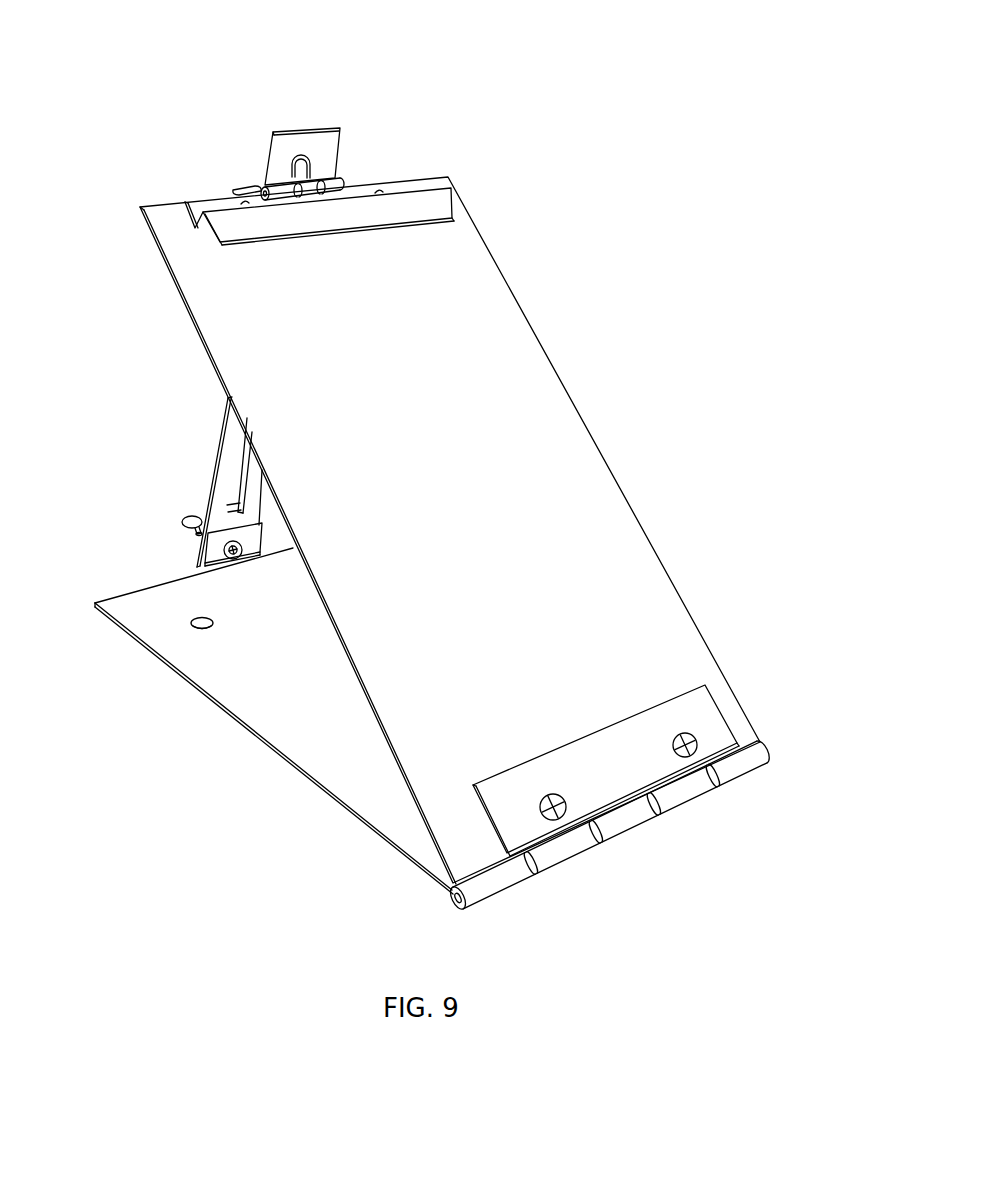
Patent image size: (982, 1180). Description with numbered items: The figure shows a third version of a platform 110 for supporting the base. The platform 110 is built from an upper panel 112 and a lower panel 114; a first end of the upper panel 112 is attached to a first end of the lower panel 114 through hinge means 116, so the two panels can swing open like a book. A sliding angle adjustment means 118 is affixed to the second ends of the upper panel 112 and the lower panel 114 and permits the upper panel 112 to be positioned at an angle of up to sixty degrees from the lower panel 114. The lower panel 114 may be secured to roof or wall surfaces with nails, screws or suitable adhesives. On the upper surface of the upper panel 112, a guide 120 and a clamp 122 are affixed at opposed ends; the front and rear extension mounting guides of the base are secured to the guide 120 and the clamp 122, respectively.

The platform 110 is at (423, 80).
The upper panel 112 is at (553, 398).
The lower panel 114 is at (233, 667).
The hinge means 116 is at (625, 822).
The sliding angle adjustment means 118 is at (220, 432).
The guide 120 is at (443, 195).
The clamp 122 is at (705, 698).